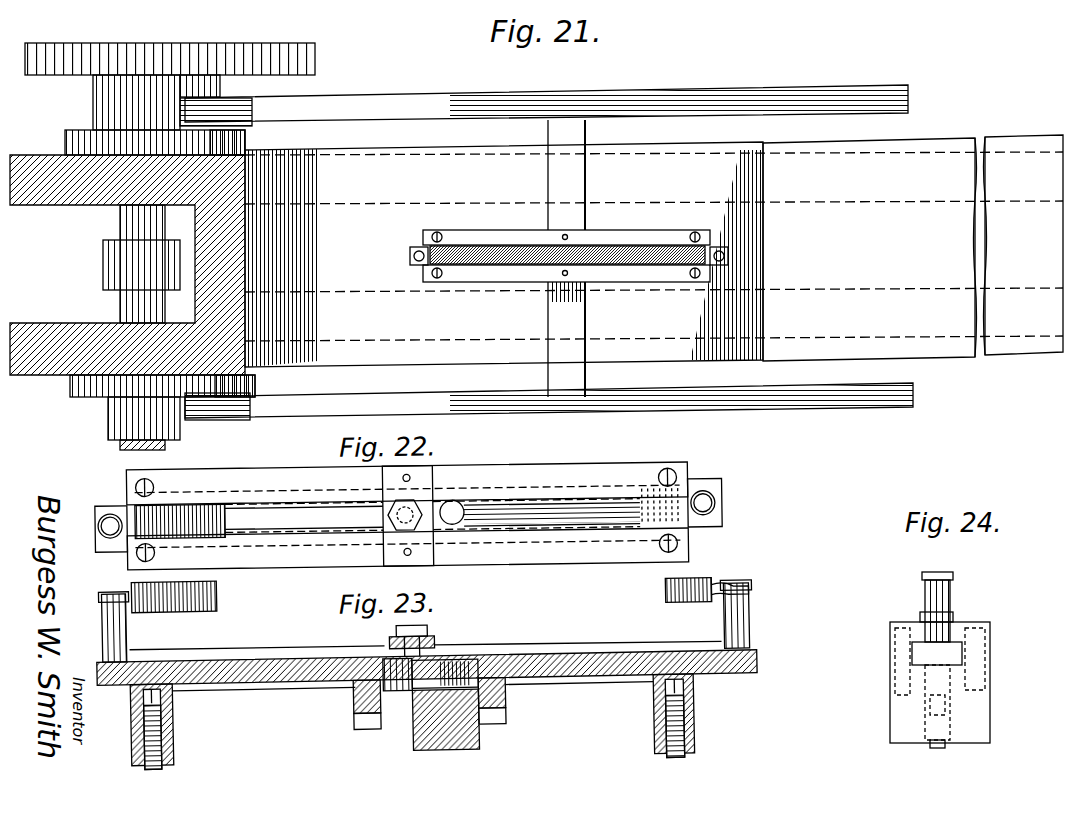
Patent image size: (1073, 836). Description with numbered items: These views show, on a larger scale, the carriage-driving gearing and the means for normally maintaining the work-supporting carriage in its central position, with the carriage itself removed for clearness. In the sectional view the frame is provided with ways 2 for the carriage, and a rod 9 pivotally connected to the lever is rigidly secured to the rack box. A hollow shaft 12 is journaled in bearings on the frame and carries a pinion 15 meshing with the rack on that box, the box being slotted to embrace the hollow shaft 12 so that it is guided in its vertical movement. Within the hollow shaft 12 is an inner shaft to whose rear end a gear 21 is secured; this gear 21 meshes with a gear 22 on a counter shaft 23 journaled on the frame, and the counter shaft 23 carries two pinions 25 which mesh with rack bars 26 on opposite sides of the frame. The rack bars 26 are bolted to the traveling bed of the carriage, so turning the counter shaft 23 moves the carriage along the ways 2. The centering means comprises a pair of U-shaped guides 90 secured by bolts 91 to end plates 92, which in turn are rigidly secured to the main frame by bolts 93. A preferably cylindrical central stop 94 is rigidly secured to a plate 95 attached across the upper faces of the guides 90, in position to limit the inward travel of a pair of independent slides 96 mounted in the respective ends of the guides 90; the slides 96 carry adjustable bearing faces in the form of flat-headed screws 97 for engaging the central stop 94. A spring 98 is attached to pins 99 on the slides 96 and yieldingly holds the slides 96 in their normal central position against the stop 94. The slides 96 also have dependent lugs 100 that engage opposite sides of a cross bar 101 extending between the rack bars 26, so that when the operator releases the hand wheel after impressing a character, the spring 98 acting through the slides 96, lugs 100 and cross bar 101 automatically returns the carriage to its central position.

In FIG. 21, the ways 2 is at (935, 343).
In FIG. 22, the rod 9 is at (560, 553).
In FIG. 21, the hollow shaft 12 is at (128, 222).
In FIG. 21, the pinion 15 is at (118, 262).
In FIG. 21, the gear 21 is at (62, 52).
In FIG. 21, the gear 22 is at (285, 50).
In FIG. 22, the counter shaft 23 is at (95, 521).
In FIG. 21, the pinions 25 is at (252, 101).
In FIG. 21, the rack bars 26 is at (372, 104).
In FIG. 21, the U-shaped guides 90 is at (600, 228).
In FIG. 22, the U-shaped guides 90 is at (578, 468).
In FIG. 23, the U-shaped guides 90 is at (606, 684).
In FIG. 24, the U-shaped guides 90 is at (918, 635).
In FIG. 21, the bolts 91 is at (690, 232).
In FIG. 22, the bolts 91 is at (676, 475).
In FIG. 24, the bolts 91 is at (893, 665).
In FIG. 23, the end plates 92 is at (174, 727).
In FIG. 23, the bolts 93 is at (174, 751).
In FIG. 24, the bolts 93 is at (900, 720).
In FIG. 23, the central stop 94 is at (445, 660).
In FIG. 22, the plate 95 is at (435, 486).
In FIG. 23, the plate 95 is at (430, 640).
In FIG. 24, the plate 95 is at (960, 625).
In FIG. 22, the slides 96 is at (288, 522).
In FIG. 23, the slides 96 is at (215, 665).
In FIG. 24, the slides 96 is at (963, 655).
In FIG. 22, the flat-headed screws 97 is at (455, 522).
In FIG. 23, the flat-headed screws 97 is at (380, 660).
In FIG. 21, the spring 98 is at (485, 228).
In FIG. 23, the spring 98 is at (667, 593).
In FIG. 22, the pins 99 is at (108, 512).
In FIG. 23, the pins 99 is at (128, 638).
In FIG. 24, the pins 99 is at (952, 590).
In FIG. 23, the dependent lugs 100 is at (353, 720).
In FIG. 21, the cross bar 101 is at (556, 322).
In FIG. 23, the cross bar 101 is at (480, 745).